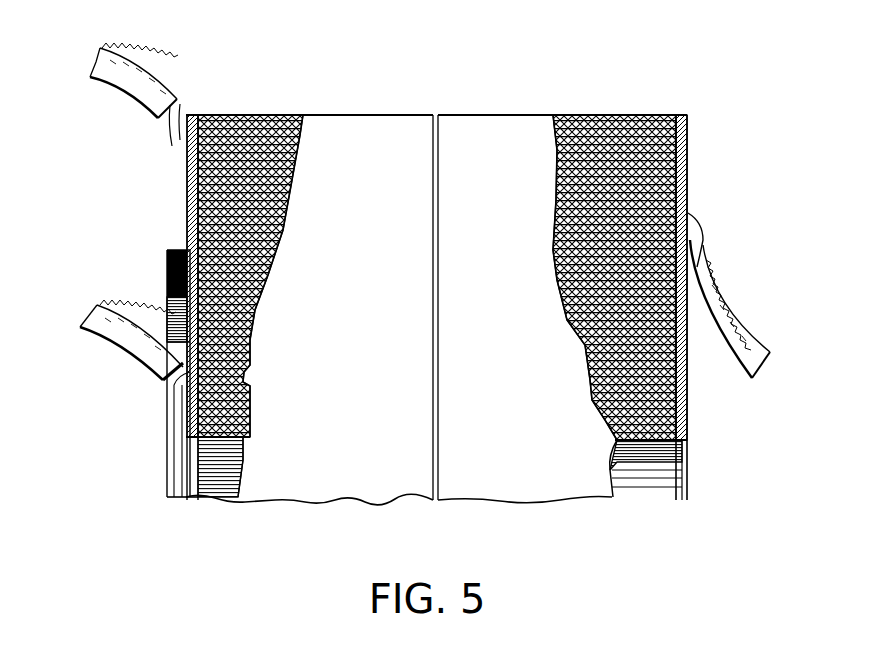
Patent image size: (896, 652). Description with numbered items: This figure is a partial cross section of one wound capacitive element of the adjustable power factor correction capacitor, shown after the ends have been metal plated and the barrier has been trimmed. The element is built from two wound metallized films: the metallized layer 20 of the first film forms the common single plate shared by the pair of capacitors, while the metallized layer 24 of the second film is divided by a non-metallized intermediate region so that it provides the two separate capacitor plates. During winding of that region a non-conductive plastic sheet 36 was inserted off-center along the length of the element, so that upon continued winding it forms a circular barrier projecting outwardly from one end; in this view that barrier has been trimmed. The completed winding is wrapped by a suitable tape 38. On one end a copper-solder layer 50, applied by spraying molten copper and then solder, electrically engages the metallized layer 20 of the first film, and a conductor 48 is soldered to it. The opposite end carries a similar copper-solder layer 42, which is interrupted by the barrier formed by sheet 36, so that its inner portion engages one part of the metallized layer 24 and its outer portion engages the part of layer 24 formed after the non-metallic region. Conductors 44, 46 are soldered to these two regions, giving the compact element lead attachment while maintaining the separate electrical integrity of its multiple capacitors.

The metallized layer of the first film 20 is at (240, 114).
The metallized layer of the second film 24 is at (667, 146).
The non-conductive sheet 36 is at (167, 289).
The tape 38 is at (282, 114).
The copper-solder layer 42 is at (186, 203).
The conductor 44 is at (108, 334).
The conductor 46 is at (135, 89).
The conductor 48 is at (698, 267).
The copper-solder layer 50 is at (688, 189).